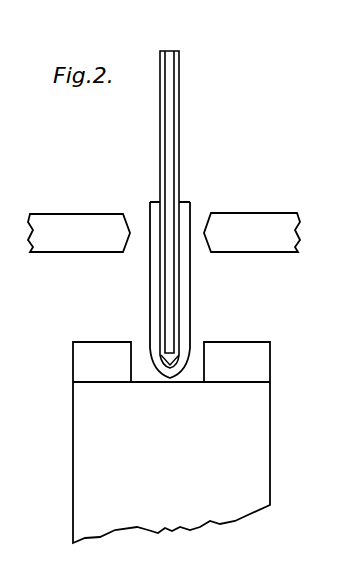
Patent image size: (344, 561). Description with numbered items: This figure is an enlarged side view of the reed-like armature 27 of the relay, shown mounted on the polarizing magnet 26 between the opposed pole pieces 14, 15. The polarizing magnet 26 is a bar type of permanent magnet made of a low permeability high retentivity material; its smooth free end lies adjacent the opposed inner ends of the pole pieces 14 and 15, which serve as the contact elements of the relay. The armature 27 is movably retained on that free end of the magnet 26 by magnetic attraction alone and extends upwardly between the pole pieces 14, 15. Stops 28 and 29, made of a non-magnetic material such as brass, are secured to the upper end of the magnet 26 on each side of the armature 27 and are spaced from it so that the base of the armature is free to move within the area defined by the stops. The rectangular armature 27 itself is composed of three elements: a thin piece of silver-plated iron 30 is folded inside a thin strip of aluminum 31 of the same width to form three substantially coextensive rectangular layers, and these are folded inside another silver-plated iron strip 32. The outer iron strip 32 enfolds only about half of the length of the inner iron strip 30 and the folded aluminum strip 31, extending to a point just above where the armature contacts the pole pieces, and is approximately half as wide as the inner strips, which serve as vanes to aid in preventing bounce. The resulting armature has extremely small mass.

The pole piece 14 is at (62, 214).
The pole piece 15 is at (270, 218).
The polarizing magnet 26 is at (73, 445).
The armature 27 is at (196, 291).
The stop 28 is at (77, 359).
The stop 29 is at (270, 356).
The inner iron strip 30 is at (170, 50).
The aluminum strip 31 is at (178, 62).
The outer iron strip 32 is at (190, 208).